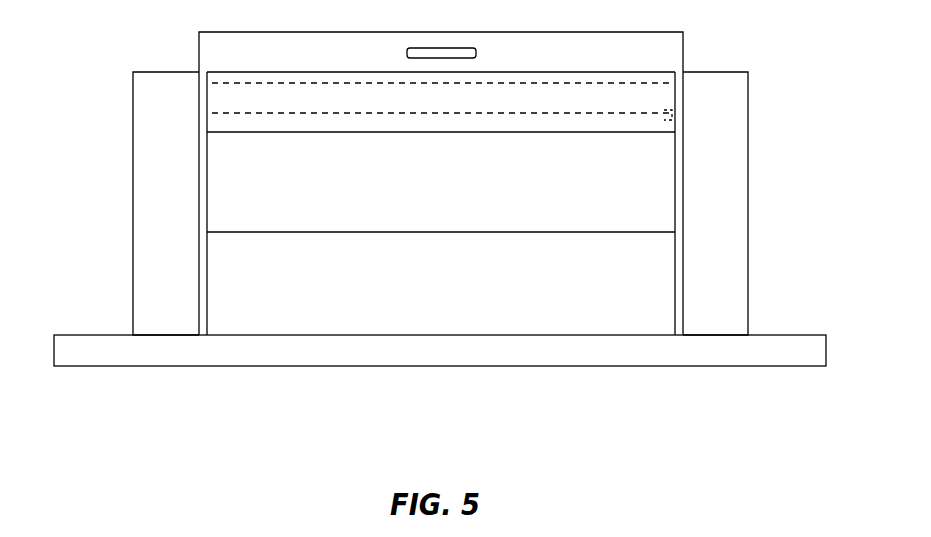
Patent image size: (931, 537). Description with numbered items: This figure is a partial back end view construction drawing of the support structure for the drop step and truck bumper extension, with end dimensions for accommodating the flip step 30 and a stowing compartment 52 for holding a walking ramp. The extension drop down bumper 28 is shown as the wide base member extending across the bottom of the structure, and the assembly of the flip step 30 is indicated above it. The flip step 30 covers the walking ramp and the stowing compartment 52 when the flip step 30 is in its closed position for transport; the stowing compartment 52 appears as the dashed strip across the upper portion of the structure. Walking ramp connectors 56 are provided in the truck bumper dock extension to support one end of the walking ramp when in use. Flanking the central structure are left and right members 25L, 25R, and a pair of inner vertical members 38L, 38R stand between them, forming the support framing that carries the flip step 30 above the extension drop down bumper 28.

The left side wall 25L is at (133, 252).
The right side wall 25R is at (748, 255).
The extension drop down bumper 28 is at (100, 335).
The flip step 30 is at (598, 382).
The left rail 38L is at (207, 283).
The right rail 38R is at (675, 287).
The stowing compartment 52 is at (555, 114).
The walking ramp connectors 56 is at (667, 120).